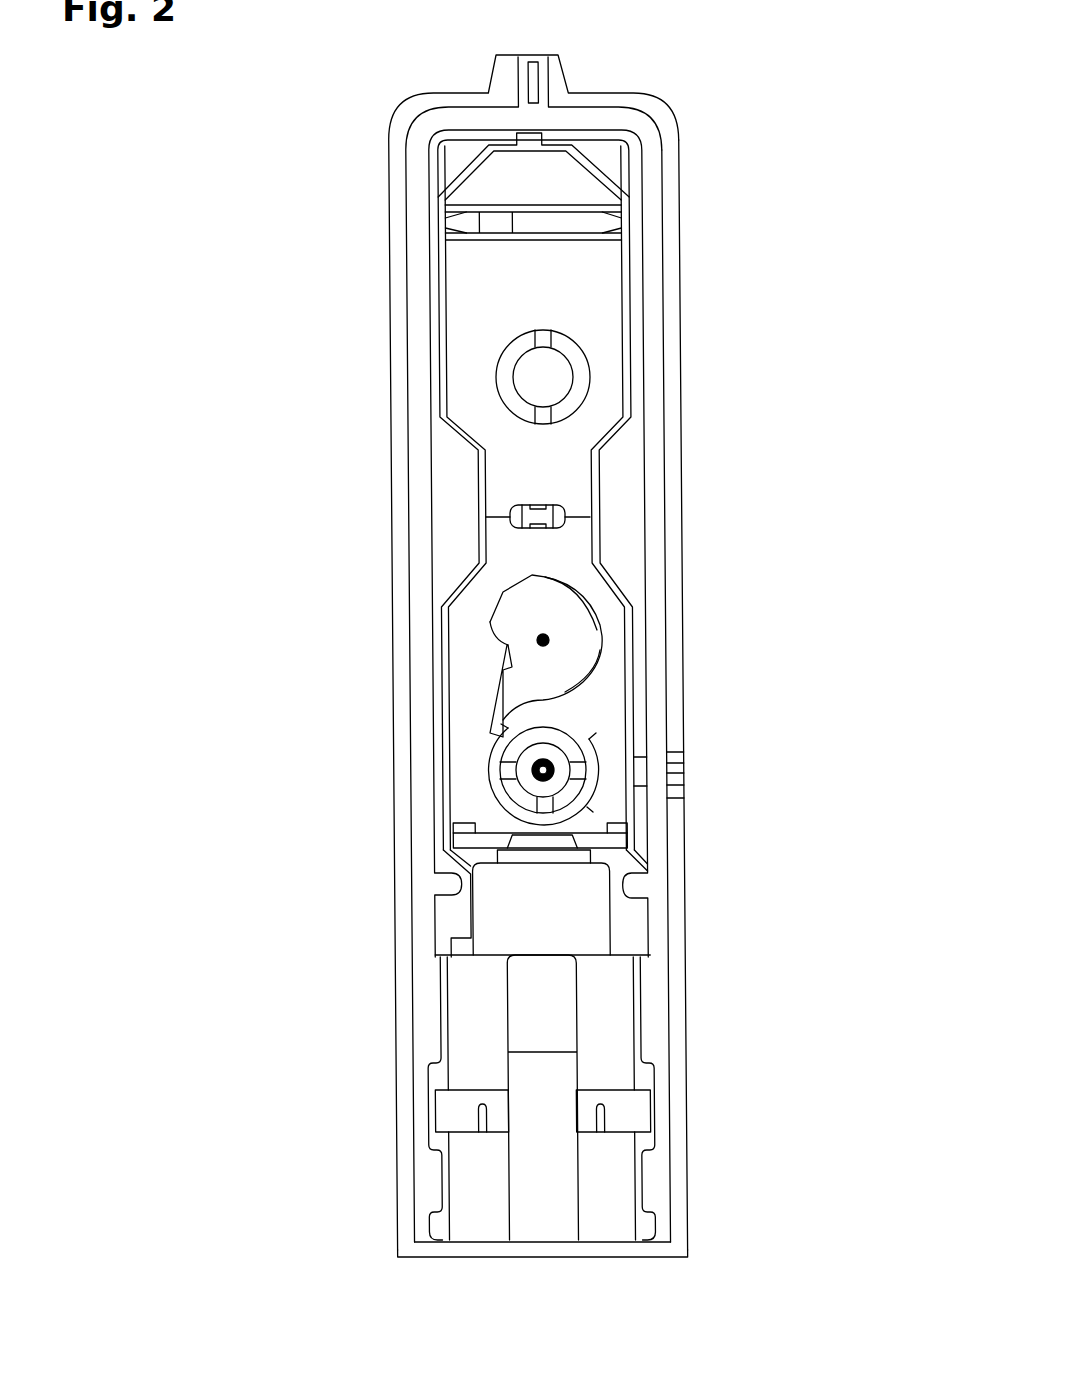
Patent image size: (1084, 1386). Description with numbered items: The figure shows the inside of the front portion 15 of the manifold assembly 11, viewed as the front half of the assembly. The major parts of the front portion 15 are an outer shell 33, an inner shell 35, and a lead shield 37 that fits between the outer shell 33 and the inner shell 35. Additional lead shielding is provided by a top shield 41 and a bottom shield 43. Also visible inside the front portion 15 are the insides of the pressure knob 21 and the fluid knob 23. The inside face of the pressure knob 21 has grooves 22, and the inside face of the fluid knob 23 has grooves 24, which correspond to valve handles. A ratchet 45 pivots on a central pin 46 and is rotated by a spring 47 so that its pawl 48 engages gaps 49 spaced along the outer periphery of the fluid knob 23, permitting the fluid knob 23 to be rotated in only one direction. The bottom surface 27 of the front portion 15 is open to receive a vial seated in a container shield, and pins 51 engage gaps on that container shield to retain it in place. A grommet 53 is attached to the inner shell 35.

The manifold assembly 11 is at (735, 185).
The front portion 15 is at (700, 432).
The pressure knob 21 is at (507, 382).
The grooves 22 is at (535, 332).
The fluid knob 23 is at (517, 762).
The grooves 24 is at (533, 806).
The bottom surface 27 is at (593, 1257).
The outer shell 33 is at (686, 603).
The inner shell 35 is at (610, 508).
The lead shield 37 is at (657, 668).
The top shield 41 is at (560, 213).
The bottom shield 43 is at (603, 840).
The ratchet 45 is at (517, 623).
The central pin 46 is at (540, 641).
The spring 47 is at (600, 640).
The pawl 48 is at (487, 711).
The gaps 49 is at (587, 807).
The pins 51 is at (463, 1122).
The grommet 53 is at (510, 518).